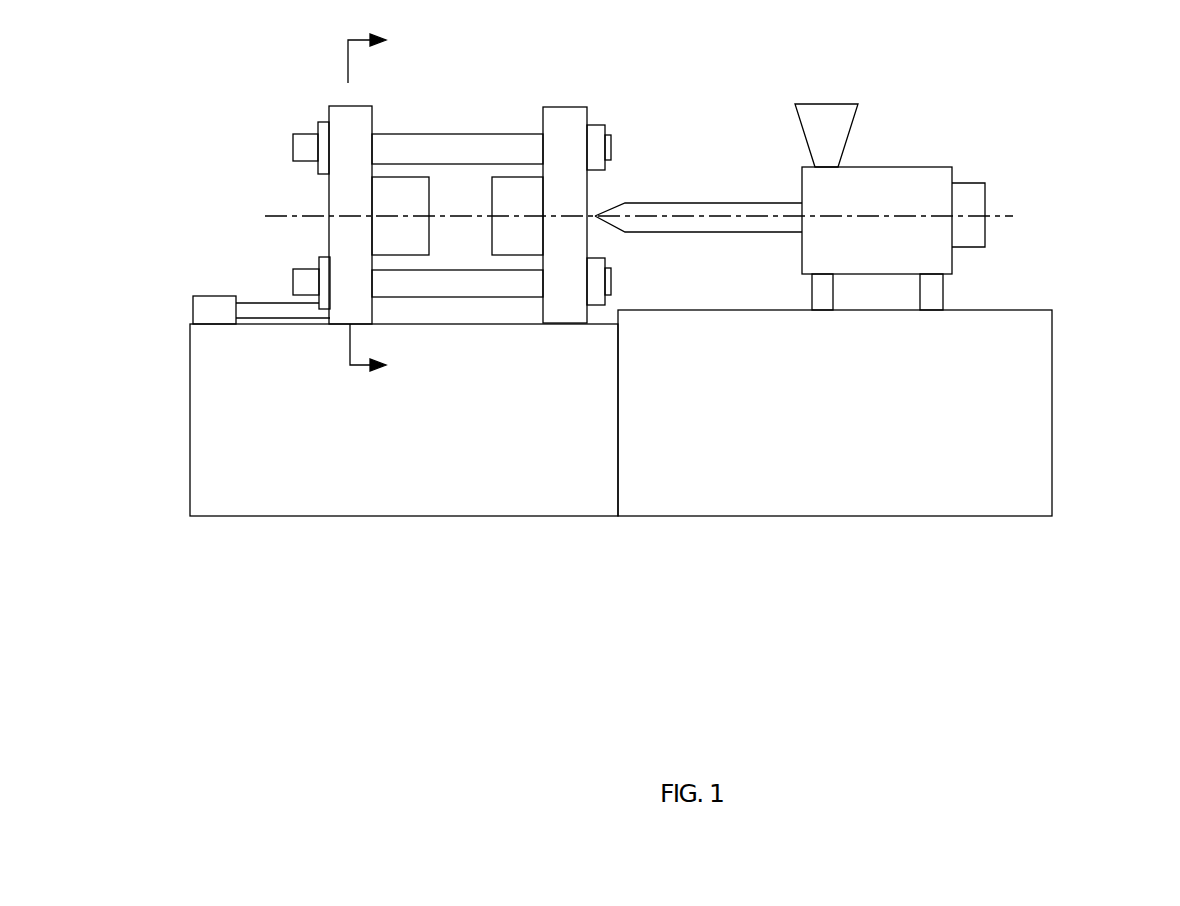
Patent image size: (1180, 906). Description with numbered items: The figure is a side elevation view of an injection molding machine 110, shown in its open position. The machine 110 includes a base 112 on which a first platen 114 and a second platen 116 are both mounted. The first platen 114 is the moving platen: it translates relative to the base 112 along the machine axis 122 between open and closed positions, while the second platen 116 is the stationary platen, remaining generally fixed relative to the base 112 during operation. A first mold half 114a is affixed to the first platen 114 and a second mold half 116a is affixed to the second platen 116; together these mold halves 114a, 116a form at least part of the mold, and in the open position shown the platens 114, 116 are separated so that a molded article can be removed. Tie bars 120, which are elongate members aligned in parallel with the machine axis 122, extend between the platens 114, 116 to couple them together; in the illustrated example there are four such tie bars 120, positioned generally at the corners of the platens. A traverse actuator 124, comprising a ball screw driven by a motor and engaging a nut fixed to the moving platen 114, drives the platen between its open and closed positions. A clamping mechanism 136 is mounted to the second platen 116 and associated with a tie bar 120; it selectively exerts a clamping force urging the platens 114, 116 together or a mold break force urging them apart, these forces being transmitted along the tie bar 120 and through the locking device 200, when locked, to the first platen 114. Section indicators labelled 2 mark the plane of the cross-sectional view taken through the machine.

The injection molding machine 110 is at (1074, 142).
The base 112 is at (860, 427).
The first platen 114 is at (350, 106).
The first mold half 114a is at (423, 213).
The second platen 116 is at (565, 110).
The second mold half 116a is at (543, 213).
The tie bar 120 is at (444, 134).
The machine axis 122 is at (446, 216).
The traverse actuator 124 is at (249, 275).
The clamping mechanism 136 is at (600, 135).
The locking device 200 is at (305, 133).
The section line for FIG. 2 is at (376, 204).